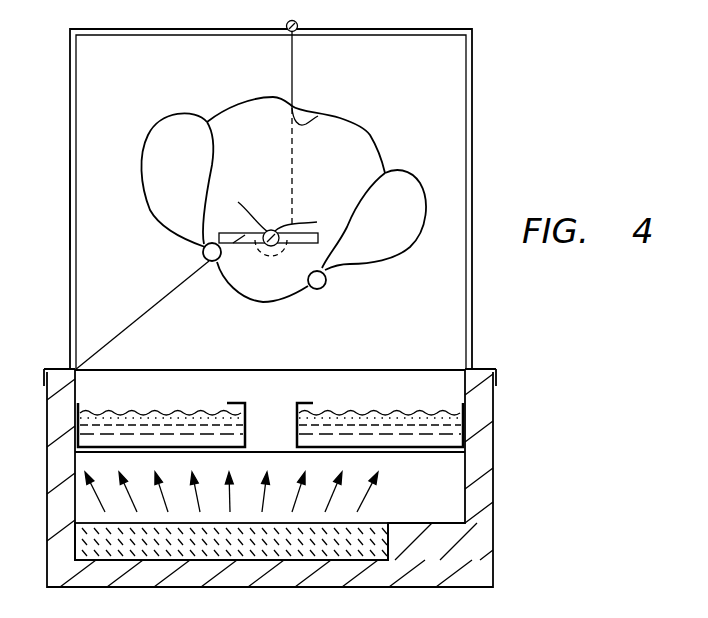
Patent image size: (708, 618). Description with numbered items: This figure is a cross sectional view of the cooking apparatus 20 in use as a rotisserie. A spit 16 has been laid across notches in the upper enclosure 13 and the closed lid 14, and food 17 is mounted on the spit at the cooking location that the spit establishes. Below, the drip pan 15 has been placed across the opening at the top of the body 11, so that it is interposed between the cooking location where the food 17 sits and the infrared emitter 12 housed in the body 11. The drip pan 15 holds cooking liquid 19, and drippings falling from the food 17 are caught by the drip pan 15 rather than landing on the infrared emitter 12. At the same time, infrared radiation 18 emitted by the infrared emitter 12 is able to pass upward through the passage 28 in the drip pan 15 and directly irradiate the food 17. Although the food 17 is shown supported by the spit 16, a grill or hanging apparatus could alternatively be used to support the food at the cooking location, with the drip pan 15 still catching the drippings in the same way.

The body 11 is at (493, 480).
The infrared emitter 12 is at (388, 543).
The upper enclosure 13 is at (472, 118).
The closed lid 14 is at (70, 193).
The drip pan 15 is at (331, 369).
The spit 16 is at (272, 231).
The food 17 is at (370, 135).
The infrared radiation 18 is at (383, 480).
The cooking liquid 19 is at (457, 430).
The cooking apparatus 20 is at (572, 141).
The passage 28 is at (263, 398).